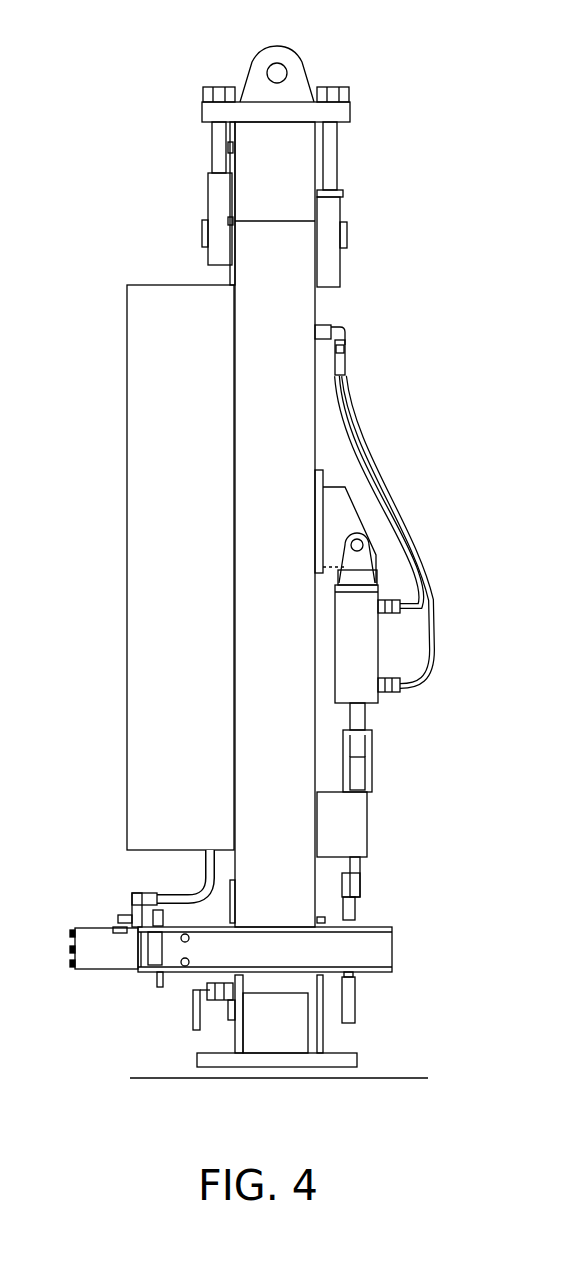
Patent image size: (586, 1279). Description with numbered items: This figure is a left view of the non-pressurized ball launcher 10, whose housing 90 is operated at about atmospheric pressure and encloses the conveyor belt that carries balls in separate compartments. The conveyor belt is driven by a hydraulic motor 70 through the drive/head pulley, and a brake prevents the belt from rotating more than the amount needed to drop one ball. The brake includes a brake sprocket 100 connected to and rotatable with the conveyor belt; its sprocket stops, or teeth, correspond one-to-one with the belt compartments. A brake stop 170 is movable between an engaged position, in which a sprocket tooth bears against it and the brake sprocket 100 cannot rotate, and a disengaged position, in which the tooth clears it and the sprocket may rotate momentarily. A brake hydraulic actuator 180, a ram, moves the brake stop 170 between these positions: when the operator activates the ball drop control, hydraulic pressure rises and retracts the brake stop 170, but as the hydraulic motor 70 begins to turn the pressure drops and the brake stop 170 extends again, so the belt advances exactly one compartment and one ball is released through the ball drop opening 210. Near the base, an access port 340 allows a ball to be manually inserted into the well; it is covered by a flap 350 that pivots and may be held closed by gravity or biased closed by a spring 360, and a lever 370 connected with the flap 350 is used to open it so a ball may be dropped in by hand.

The non-pressurized ball launcher 10 is at (408, 62).
The housing 90 is at (315, 312).
The brake hydraulic actuator 180 is at (363, 690).
The brake stop 170 is at (363, 870).
The hydraulic motor 70 is at (83, 928).
The spring 360 is at (193, 982).
The lever 370 is at (192, 1020).
The flap 350 is at (295, 1031).
The access port 340 is at (278, 1047).
The brake sprocket 100 is at (357, 1012).
The ball drop opening 210 is at (267, 1075).